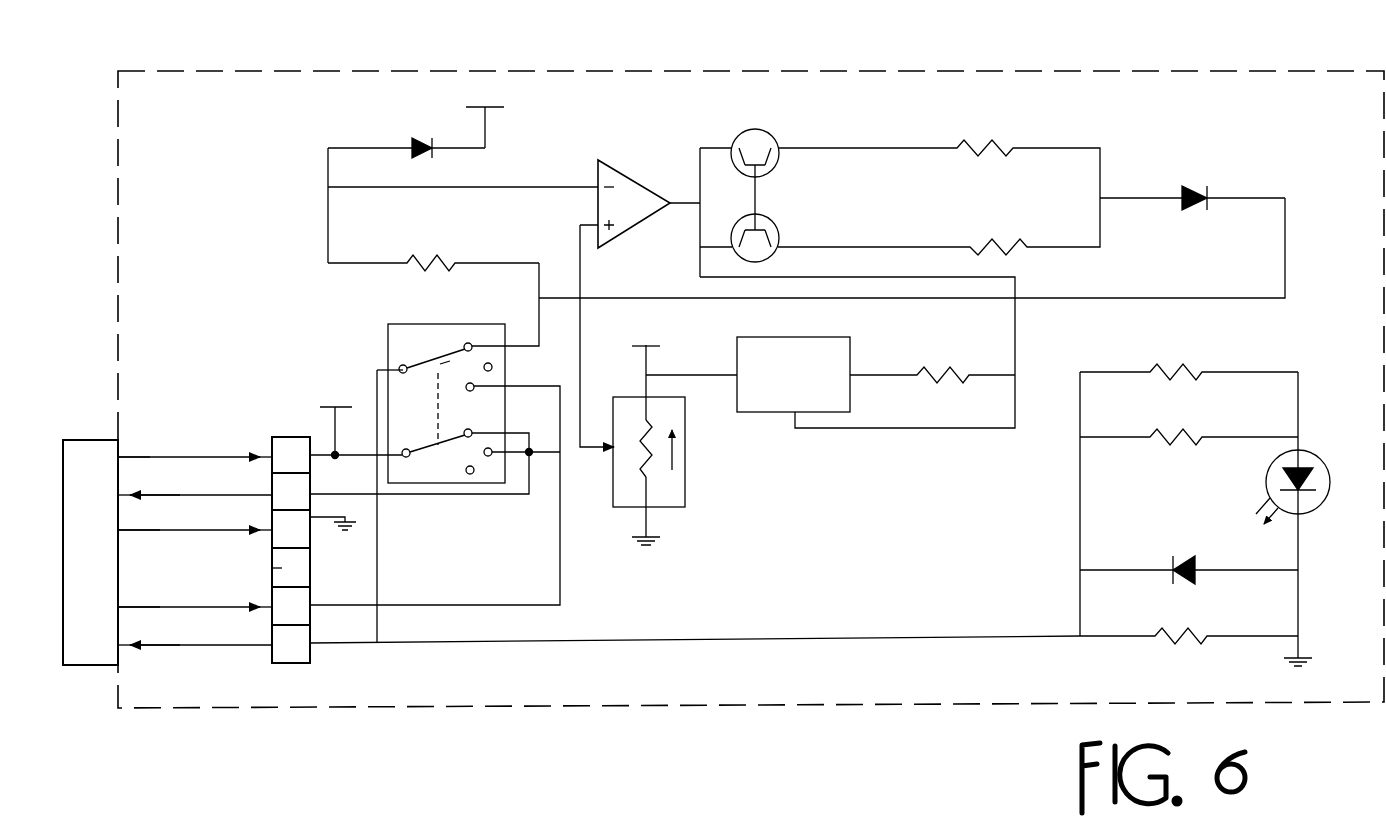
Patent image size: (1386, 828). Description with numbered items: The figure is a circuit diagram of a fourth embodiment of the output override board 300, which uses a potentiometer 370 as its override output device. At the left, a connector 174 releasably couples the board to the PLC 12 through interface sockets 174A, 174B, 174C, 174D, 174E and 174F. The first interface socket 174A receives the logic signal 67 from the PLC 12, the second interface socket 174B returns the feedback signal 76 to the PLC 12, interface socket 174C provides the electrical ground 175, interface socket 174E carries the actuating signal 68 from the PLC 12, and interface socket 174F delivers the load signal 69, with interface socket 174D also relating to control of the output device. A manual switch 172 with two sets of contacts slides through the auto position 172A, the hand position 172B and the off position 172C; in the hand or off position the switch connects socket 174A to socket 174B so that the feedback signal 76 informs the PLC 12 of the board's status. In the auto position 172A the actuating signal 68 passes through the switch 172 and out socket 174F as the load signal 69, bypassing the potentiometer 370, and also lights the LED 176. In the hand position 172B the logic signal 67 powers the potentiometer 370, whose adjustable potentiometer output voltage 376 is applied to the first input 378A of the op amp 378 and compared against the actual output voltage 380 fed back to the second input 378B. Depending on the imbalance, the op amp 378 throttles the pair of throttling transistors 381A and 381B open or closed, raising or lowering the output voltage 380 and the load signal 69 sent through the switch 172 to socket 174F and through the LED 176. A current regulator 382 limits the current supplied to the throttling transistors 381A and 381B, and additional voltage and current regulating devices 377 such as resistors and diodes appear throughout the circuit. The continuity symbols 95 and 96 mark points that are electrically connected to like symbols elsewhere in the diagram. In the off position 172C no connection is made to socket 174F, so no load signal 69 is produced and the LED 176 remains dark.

The output override board 300 is at (308, 68).
The PLC 12 is at (96, 548).
The connector 174 is at (294, 666).
The first interface socket 174A is at (270, 446).
The second interface socket 174B is at (276, 488).
The interface socket 174C is at (276, 522).
The interface socket 174D is at (276, 561).
The interface socket 174E is at (276, 599).
The interface socket 174F is at (276, 637).
The logic signal 67 is at (150, 456).
The feedback signal 76 is at (148, 498).
The electrical ground 175 is at (130, 534).
The actuating signal 68 is at (134, 610).
The load signal 69 is at (146, 650).
The continuity symbol 96 is at (340, 372).
The manual switch 172 is at (386, 320).
The auto position 172A is at (474, 390).
The hand position 172B is at (468, 343).
The off position 172C is at (492, 366).
The continuity symbol 95 is at (344, 536).
The actual output voltage 380 is at (450, 190).
The potentiometer output voltage 376 is at (583, 330).
The voltage and current regulating devices 377 is at (412, 144).
The op amp 378 is at (624, 198).
The first input 378A is at (590, 228).
The second input 378B is at (598, 184).
The throttling transistor 381A is at (770, 136).
The throttling transistor 381B is at (770, 226).
The current regulator 382 is at (800, 336).
The potentiometer 370 is at (686, 494).
The LED 176 is at (1320, 506).